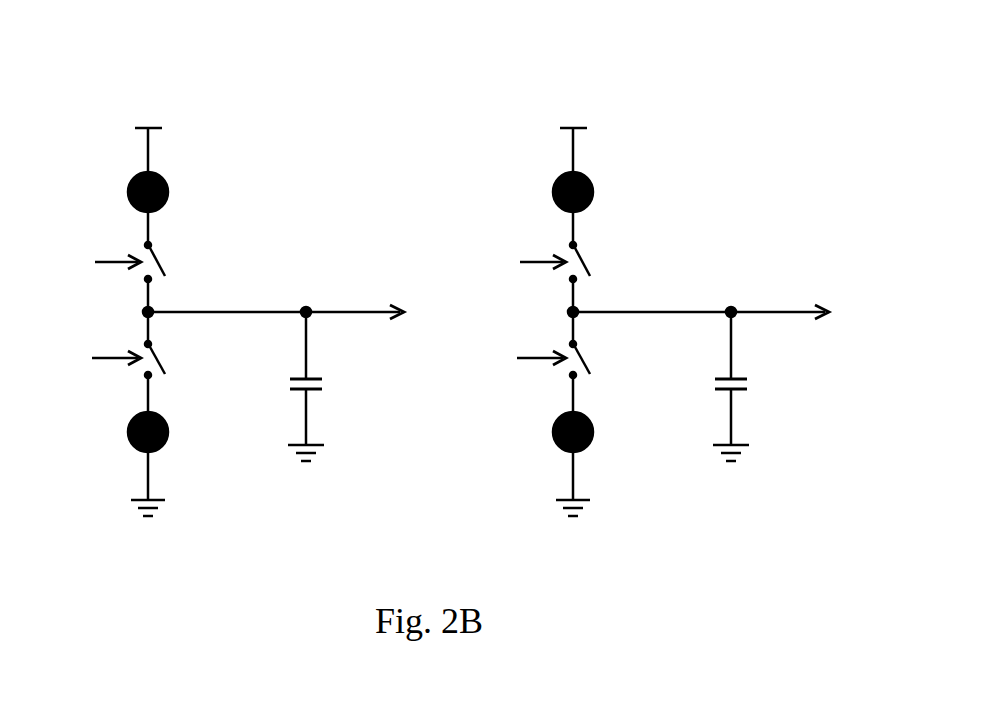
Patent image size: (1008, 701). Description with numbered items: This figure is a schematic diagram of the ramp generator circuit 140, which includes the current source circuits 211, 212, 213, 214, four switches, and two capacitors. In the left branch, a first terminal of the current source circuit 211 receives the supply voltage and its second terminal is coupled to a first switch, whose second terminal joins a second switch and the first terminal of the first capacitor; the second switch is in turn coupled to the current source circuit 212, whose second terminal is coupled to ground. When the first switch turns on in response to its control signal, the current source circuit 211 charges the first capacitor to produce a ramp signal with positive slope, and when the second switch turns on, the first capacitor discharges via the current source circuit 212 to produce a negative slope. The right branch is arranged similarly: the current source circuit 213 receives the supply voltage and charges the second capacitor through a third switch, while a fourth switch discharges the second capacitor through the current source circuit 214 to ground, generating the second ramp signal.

The ramp generator circuit 140 is at (443, 28).
The current source circuit 211 is at (168, 190).
The current source circuit 212 is at (167, 428).
The current source circuit 213 is at (593, 190).
The current source circuit 214 is at (592, 428).